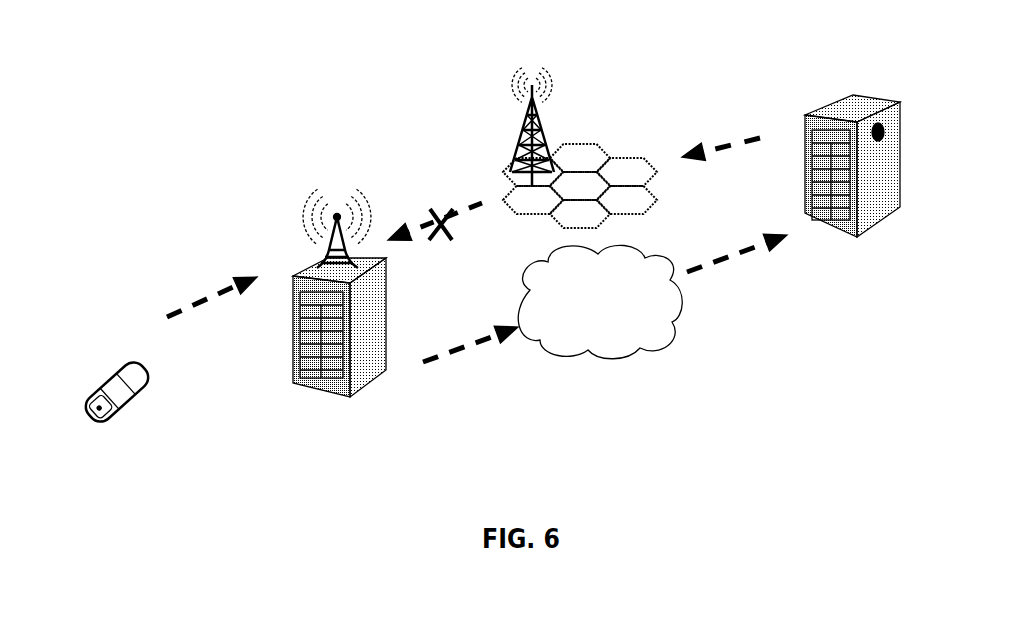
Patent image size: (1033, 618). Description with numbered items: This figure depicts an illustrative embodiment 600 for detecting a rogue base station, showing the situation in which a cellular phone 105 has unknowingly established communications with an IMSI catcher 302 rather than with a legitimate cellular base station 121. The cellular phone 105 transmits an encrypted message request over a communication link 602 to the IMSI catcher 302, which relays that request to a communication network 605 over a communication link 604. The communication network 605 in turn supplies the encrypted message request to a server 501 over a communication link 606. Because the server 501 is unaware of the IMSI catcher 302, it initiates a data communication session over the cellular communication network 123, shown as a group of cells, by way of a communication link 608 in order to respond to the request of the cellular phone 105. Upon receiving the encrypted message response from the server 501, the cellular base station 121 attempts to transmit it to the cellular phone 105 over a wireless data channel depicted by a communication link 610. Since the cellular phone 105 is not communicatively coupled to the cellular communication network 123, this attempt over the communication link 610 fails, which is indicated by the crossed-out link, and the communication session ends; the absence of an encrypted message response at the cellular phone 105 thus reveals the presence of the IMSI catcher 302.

The cellular phone 105 is at (150, 378).
The cellular base station 121 is at (552, 85).
The cellular communication network 123 is at (578, 158).
The IMSI catcher 302 is at (337, 217).
The heart beat server 501 is at (828, 108).
The system 600 is at (542, 506).
The communication link 602 is at (185, 310).
The communication link 604 is at (423, 362).
The communication network 605 is at (613, 330).
The communication link 606 is at (687, 272).
The communication link 608 is at (720, 148).
The communication link 610 is at (433, 207).